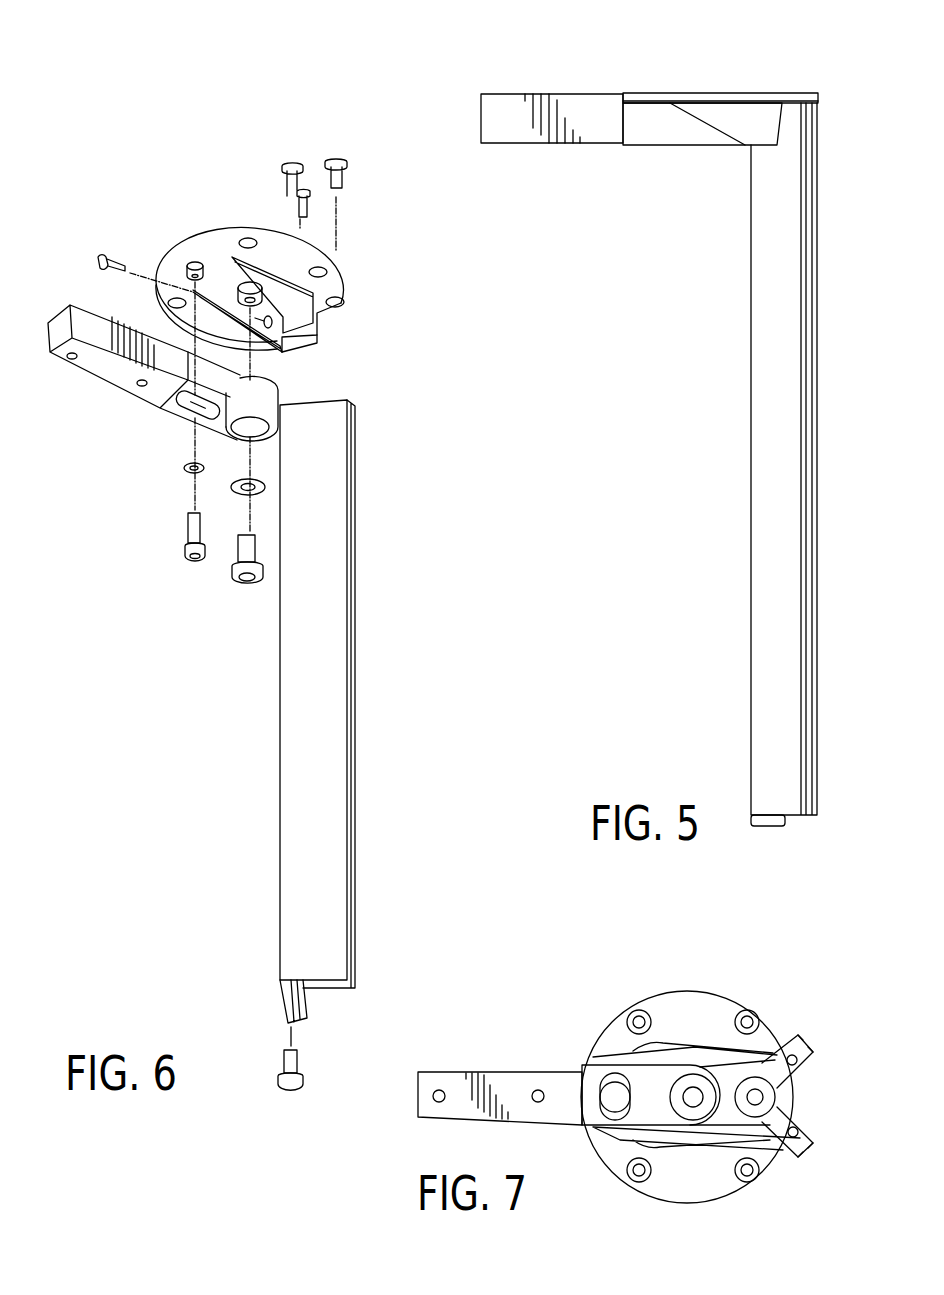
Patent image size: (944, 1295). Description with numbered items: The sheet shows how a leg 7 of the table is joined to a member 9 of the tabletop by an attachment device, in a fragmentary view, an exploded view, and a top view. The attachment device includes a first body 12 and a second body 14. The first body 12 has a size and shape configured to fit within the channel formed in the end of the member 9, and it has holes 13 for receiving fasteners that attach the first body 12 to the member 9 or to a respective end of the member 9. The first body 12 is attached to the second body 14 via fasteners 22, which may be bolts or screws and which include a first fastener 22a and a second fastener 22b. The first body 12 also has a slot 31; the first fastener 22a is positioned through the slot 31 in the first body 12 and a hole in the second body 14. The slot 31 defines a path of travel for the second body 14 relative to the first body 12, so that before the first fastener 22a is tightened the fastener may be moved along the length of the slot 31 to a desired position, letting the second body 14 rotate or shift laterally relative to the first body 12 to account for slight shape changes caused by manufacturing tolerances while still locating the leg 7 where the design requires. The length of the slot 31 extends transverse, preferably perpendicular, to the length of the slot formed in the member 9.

In FIG. 5, the leg 7 is at (765, 456).
In FIG. 6, the leg 7 is at (350, 670).
In FIG. 5, the member 9 is at (573, 107).
In FIG. 5, the first body 12 is at (667, 137).
In FIG. 6, the first body 12 is at (112, 380).
In FIG. 7, the first body 12 is at (500, 1073).
In FIG. 6, the holes 13 is at (70, 362).
In FIG. 5, the second body 14 is at (714, 97).
In FIG. 6, the second body 14 is at (215, 235).
In FIG. 6, the fasteners 22 is at (158, 608).
In FIG. 6, the first fastener 22a is at (187, 540).
In FIG. 7, the first fastener 22a is at (607, 1083).
In FIG. 6, the second fastener 22b is at (242, 585).
In FIG. 7, the second fastener 22b is at (693, 1087).
In FIG. 6, the slot 31 is at (270, 382).